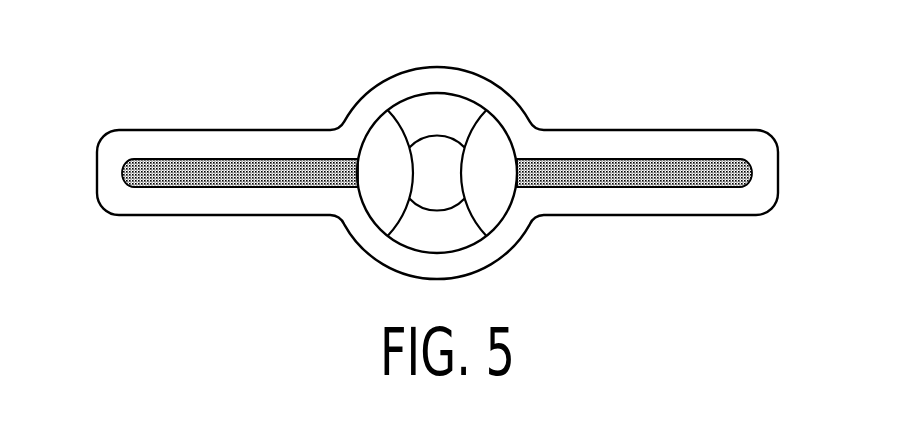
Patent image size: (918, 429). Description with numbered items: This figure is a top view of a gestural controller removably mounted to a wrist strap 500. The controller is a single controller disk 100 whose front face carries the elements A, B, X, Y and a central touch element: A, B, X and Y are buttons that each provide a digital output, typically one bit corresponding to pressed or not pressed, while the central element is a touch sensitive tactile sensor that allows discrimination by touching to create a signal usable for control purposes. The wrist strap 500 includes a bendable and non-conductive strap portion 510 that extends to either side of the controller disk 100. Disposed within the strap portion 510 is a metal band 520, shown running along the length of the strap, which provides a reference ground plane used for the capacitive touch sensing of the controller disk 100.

The controller disk 100 is at (457, 92).
The wrist strap 500 is at (642, 70).
The strap portion 510 is at (165, 215).
The metal band 520 is at (205, 187).